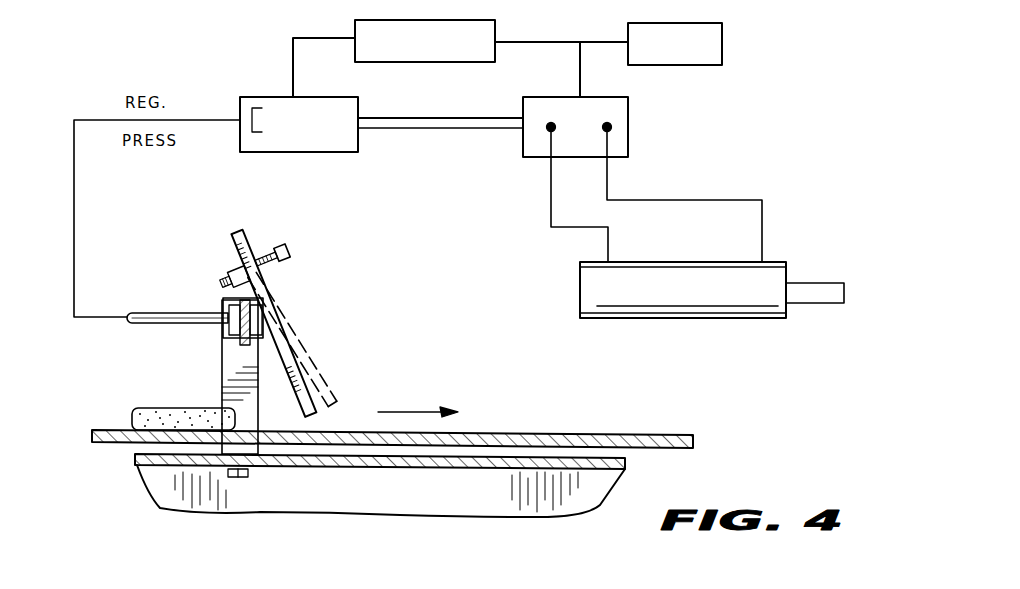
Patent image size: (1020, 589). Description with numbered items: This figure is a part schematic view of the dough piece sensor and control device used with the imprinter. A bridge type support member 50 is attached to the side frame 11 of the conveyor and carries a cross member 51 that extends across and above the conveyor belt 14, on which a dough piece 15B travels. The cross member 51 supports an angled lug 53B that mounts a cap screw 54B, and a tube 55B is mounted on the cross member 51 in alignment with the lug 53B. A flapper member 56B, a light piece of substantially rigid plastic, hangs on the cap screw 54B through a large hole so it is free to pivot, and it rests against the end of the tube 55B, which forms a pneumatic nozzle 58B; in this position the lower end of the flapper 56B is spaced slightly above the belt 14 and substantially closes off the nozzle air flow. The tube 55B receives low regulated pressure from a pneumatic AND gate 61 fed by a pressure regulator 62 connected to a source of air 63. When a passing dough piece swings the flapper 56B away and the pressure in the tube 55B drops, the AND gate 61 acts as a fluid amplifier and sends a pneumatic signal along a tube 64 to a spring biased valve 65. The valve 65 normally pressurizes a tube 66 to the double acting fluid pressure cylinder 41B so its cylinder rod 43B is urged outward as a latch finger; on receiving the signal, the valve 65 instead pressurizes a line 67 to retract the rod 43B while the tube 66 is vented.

The side frame 11 is at (537, 498).
The conveyor belt 14 is at (570, 437).
The article / workpiece 15B is at (132, 412).
The fluid pressure cylinder 41B is at (706, 318).
The cylinder rod 43B is at (810, 283).
The support member 50 is at (203, 393).
The cross member 51 is at (240, 345).
The angled lug 53B is at (228, 248).
The cap screw 54B is at (258, 258).
The tube 55B is at (163, 313).
The flapper member 56B is at (317, 372).
The pneumatic nozzle 58B is at (265, 322).
The pneumatic AND gate 61 is at (335, 152).
The pressure regulator 62 is at (475, 20).
The source of air 63 is at (722, 43).
The tube 64 is at (452, 130).
The valve 65 is at (628, 129).
The tube 66 is at (548, 215).
The line 67 is at (740, 200).